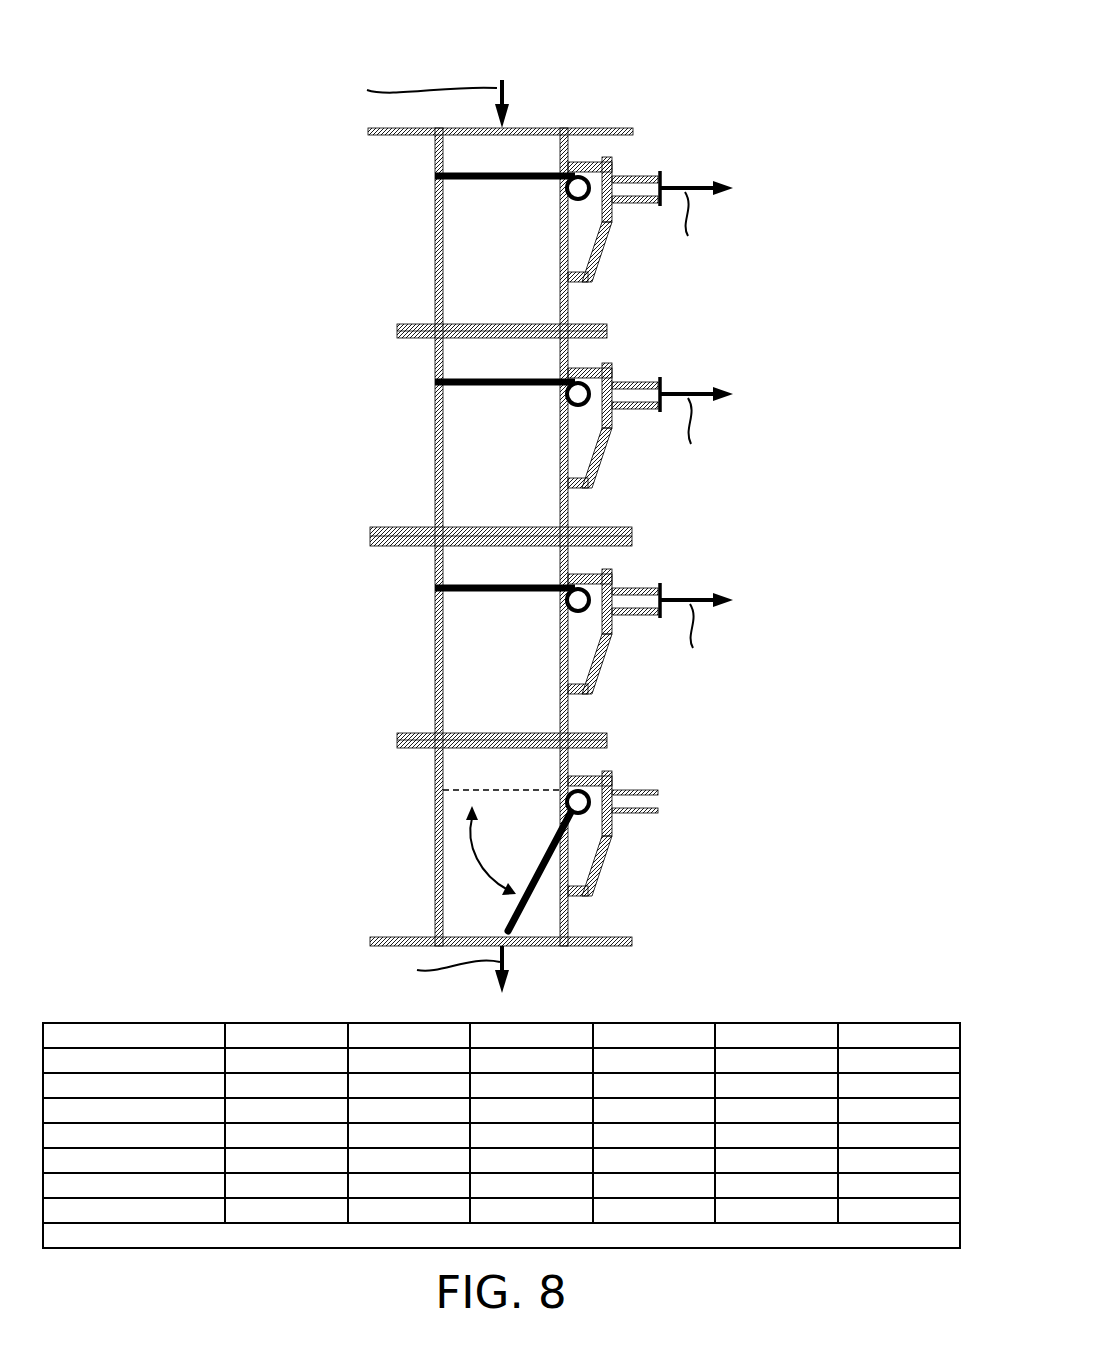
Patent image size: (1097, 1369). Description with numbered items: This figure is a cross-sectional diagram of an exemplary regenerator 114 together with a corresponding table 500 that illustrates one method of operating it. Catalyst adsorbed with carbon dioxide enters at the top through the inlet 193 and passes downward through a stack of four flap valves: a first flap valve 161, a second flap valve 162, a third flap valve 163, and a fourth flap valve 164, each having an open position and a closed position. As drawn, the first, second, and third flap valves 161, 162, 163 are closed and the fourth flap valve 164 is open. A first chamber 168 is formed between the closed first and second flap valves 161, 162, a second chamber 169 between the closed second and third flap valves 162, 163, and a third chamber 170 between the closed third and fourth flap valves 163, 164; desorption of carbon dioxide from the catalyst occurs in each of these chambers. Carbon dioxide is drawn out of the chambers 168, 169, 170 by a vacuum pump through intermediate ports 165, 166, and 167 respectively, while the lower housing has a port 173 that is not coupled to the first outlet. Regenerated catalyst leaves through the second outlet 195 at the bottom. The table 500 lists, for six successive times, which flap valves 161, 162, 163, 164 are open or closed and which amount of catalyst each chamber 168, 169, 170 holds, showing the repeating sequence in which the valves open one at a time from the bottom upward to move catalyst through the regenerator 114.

The regenerator 114 is at (818, 70).
The inlet 193 is at (552, 105).
The first flap valve 161 is at (457, 180).
The second flap valve 162 is at (455, 378).
The third flap valve 163 is at (455, 590).
The fourth flap valve 164 is at (510, 915).
The port 165 is at (641, 175).
The port 166 is at (641, 381).
The port 167 is at (641, 587).
The first chamber 168 is at (488, 285).
The second chamber 169 is at (488, 503).
The third chamber 170 is at (488, 705).
The port 173 is at (641, 790).
The second outlet 195 is at (561, 960).
The table 500 is at (85, 1021).